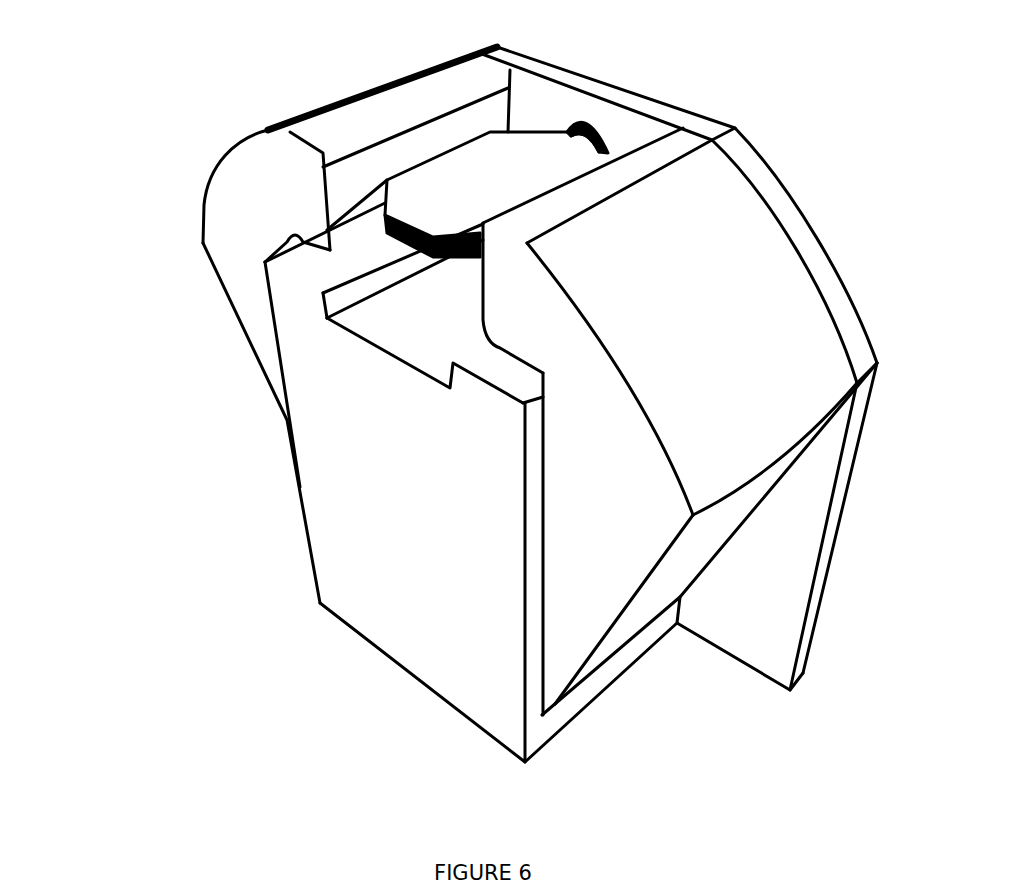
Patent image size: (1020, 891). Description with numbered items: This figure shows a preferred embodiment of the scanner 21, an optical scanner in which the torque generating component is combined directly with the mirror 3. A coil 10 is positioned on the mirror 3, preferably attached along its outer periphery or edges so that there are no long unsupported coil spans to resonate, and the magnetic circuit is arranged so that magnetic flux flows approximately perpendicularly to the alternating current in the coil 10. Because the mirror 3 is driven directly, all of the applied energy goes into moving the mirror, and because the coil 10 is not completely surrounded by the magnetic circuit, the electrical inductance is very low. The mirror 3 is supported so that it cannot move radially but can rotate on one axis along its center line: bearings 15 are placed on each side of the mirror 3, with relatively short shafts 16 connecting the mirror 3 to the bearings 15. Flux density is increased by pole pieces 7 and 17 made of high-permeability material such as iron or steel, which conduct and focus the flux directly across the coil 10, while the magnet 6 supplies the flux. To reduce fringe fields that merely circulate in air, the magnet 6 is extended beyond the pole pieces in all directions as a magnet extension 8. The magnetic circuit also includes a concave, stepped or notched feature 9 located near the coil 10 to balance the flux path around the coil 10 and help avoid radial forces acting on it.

The scanner 21 is at (115, 122).
The mirror 3 is at (477, 167).
The magnet 6 is at (400, 588).
The pole piece 7 is at (238, 202).
The magnet extension 8 is at (555, 720).
The concave, stepped or notched feature 9 is at (353, 290).
The coil 10 is at (400, 234).
The bearing 15 is at (590, 117).
The shaft 16 is at (566, 131).
The pole piece 17 is at (718, 277).